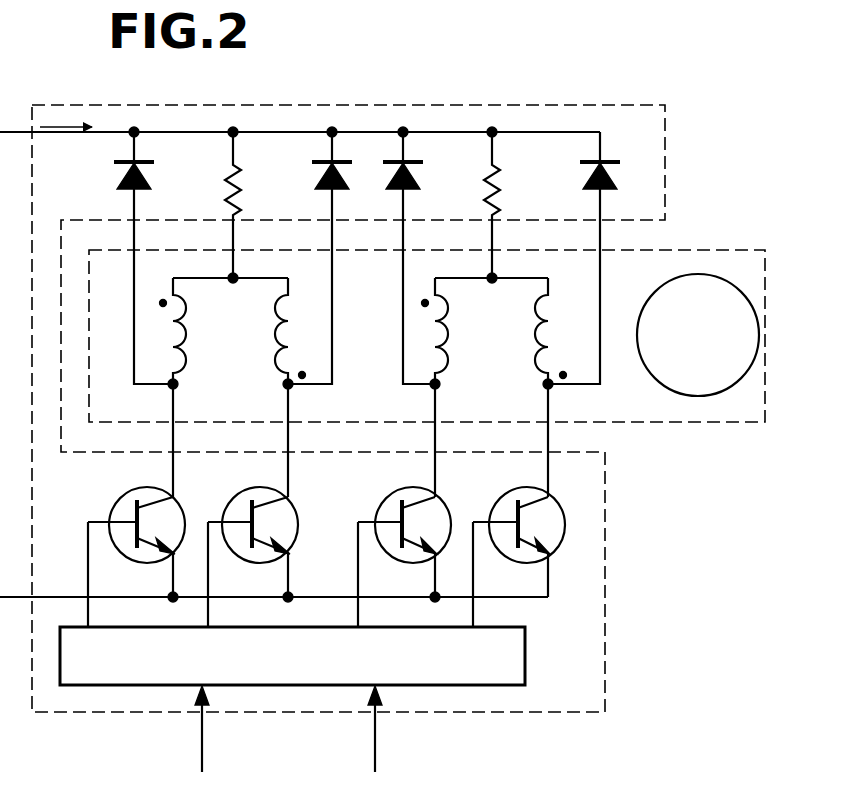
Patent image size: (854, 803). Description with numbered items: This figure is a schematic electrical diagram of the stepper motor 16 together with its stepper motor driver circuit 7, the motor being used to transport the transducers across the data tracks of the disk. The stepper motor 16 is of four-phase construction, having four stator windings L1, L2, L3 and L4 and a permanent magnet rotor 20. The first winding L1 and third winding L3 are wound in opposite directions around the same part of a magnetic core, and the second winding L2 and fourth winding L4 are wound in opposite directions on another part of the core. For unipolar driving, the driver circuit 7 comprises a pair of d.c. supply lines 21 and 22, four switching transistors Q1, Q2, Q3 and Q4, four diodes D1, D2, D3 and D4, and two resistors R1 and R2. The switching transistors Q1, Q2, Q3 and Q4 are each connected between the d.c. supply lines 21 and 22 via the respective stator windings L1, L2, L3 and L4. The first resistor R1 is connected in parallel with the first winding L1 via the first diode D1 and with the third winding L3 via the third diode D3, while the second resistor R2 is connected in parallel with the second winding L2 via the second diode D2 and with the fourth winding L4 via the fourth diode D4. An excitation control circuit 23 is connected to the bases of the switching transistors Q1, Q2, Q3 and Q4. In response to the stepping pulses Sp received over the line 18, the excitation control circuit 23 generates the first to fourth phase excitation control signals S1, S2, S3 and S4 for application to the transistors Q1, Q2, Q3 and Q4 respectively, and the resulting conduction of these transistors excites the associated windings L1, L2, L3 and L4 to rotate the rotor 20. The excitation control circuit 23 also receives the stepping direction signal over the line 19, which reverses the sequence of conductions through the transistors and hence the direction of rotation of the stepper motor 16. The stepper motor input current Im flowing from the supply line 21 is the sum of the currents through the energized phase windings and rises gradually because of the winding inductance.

The stepper motor driver circuit 7 is at (610, 672).
The stepper motor 16 is at (708, 249).
The line 18 is at (200, 722).
The line 19 is at (372, 736).
The permanent magnet rotor 20 is at (663, 288).
The d.c. supply line 21 is at (58, 93).
The d.c. supply line 22 is at (51, 596).
The excitation control circuit 23 is at (527, 663).
The first diode D1 is at (152, 170).
The second diode D2 is at (420, 175).
The third diode D3 is at (348, 170).
The fourth diode D4 is at (618, 175).
The first resistor R1 is at (243, 178).
The second resistor R2 is at (503, 178).
The first stator winding L1 is at (188, 344).
The second stator winding L2 is at (450, 344).
The third stator winding L3 is at (278, 344).
The fourth stator winding L4 is at (538, 344).
The first switching transistor Q1 is at (112, 505).
The second switching transistor Q2 is at (378, 508).
The third switching transistor Q3 is at (228, 506).
The fourth switching transistor Q4 is at (504, 508).
The first phase excitation control signal S1 is at (90, 583).
The second phase excitation control signal S2 is at (360, 583).
The third phase excitation control signal S3 is at (210, 583).
The fourth phase excitation control signal S4 is at (475, 583).
The stepping pulses Sp is at (206, 742).
The stepper motor input current Im is at (66, 96).